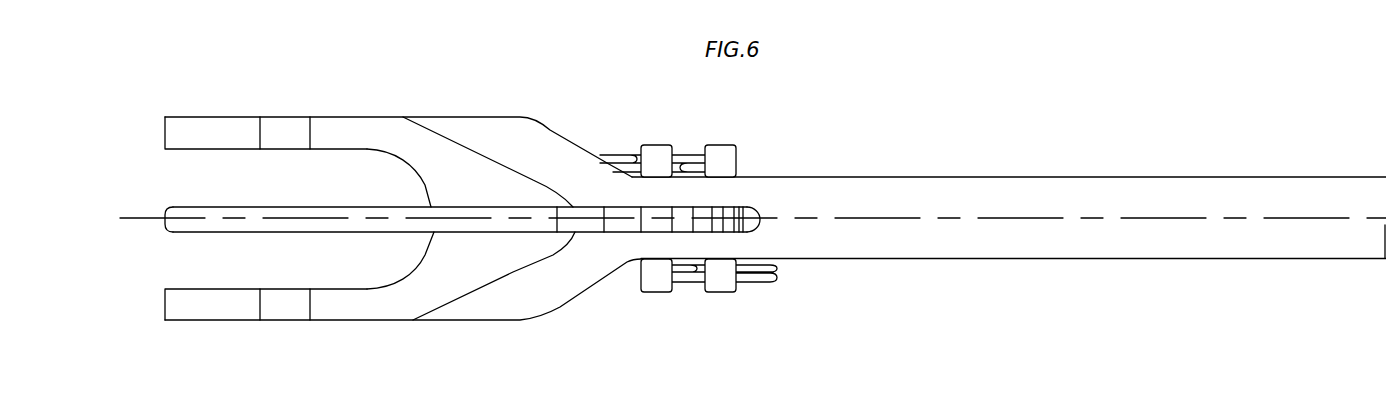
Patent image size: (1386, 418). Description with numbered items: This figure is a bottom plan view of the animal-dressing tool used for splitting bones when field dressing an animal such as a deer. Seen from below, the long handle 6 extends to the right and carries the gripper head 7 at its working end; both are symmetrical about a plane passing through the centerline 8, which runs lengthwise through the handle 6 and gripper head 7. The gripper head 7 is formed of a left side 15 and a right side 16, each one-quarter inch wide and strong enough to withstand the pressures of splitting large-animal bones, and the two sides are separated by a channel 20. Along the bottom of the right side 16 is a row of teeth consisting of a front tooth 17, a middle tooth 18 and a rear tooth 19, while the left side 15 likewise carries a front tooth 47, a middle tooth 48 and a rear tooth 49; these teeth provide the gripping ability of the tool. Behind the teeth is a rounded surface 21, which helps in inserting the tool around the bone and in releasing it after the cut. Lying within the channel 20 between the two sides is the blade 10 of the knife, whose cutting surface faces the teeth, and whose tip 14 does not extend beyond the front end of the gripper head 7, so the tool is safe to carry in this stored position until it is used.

The handle 6 is at (1193, 252).
The gripper head 7 is at (576, 113).
The centerline 8 is at (1385, 152).
The blade 10 is at (283, 232).
The tip 14 is at (165, 210).
The left side 15 is at (203, 320).
The right side 16 is at (198, 117).
The front tooth 17 is at (165, 130).
The middle tooth 18 is at (260, 130).
The rear tooth 19 is at (310, 130).
The channel 20 is at (333, 178).
The rounded surface 21 is at (478, 245).
The front tooth 47 is at (165, 305).
The middle tooth 48 is at (258, 305).
The rear tooth 49 is at (306, 305).